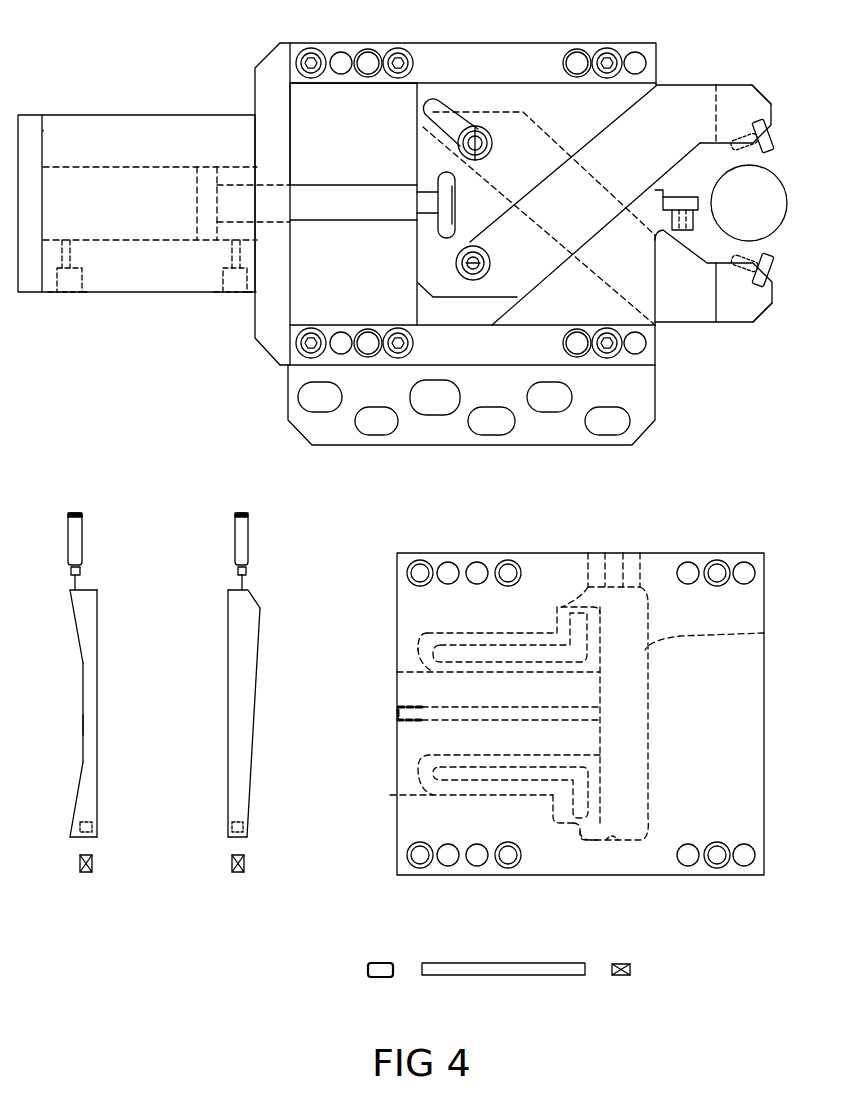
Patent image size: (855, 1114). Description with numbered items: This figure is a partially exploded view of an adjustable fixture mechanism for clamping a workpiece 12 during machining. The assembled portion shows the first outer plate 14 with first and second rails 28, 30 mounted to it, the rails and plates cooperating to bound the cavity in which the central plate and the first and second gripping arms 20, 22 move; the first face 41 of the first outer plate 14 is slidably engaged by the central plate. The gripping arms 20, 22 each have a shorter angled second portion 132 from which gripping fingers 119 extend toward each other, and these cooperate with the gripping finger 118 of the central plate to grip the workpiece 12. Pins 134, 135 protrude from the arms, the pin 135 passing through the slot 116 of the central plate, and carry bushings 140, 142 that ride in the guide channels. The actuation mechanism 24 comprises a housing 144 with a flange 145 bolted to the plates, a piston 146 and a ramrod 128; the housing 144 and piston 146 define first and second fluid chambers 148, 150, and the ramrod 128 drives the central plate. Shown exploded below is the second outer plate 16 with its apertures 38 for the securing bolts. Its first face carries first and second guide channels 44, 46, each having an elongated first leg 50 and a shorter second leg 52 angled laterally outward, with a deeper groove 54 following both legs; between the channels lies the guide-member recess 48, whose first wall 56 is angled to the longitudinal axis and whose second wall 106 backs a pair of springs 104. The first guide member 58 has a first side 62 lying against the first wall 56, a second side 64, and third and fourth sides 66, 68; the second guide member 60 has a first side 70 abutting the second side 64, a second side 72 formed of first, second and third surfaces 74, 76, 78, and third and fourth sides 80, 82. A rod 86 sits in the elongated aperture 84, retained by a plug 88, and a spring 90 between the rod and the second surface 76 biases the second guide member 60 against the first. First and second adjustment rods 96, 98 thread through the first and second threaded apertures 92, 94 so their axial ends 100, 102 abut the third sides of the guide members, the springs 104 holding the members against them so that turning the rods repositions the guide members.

The workpiece 12 is at (768, 192).
The first outer plate 14 is at (668, 393).
The second outer plate 16 is at (772, 712).
The first gripping arm 20 is at (680, 98).
The second gripping arm 22 is at (683, 310).
The actuation mechanism 24 is at (121, 110).
The first rail 28 is at (459, 50).
The second rail 30 is at (648, 357).
The apertures 38 is at (508, 560).
The first face 41 is at (355, 108).
The first guide channel 44 is at (408, 650).
The second guide channel 46 is at (408, 770).
The guide-member recess 48 is at (637, 730).
The first leg 50 is at (447, 633).
The second leg 52 is at (570, 597).
The groove 54 is at (435, 672).
The first wall 56 is at (764, 633).
The first guide member 58 is at (242, 690).
The second guide member 60 is at (85, 690).
The first side 62 is at (255, 760).
The second side 64 is at (228, 714).
The third side 66 is at (249, 592).
The fourth side 68 is at (232, 838).
The first side 70 is at (98, 733).
The second side 72 is at (82, 723).
The first surface 74 is at (78, 627).
The second surface 76 is at (83, 688).
The third surface 78 is at (78, 790).
The third side 80 is at (85, 590).
The fourth side 82 is at (76, 838).
The elongated aperture 84 is at (410, 707).
The rod 86 is at (503, 976).
The plug 88 is at (380, 978).
The spring 90 is at (618, 977).
The first threaded aperture 92 is at (645, 553).
The second threaded aperture 94 is at (583, 590).
The first adjustment rod 96 is at (243, 528).
The second adjustment rod 98 is at (78, 528).
The axial end 100 is at (241, 578).
The axial end 102 is at (74, 578).
The springs 104 is at (86, 874).
The second wall 106 is at (613, 840).
The slot 116 is at (430, 105).
The gripping finger 118 is at (677, 200).
The gripping fingers 119 is at (765, 142).
The ramrod 128 is at (337, 208).
The second portion 132 is at (750, 97).
The pin 134 is at (476, 133).
The pin 135 is at (465, 268).
The bushing 140 is at (498, 130).
The bushing 142 is at (472, 280).
The housing 144 is at (146, 298).
The flange 145 is at (272, 73).
The piston 146 is at (205, 175).
The first fluid chamber 148 is at (105, 178).
The second fluid chamber 150 is at (237, 173).